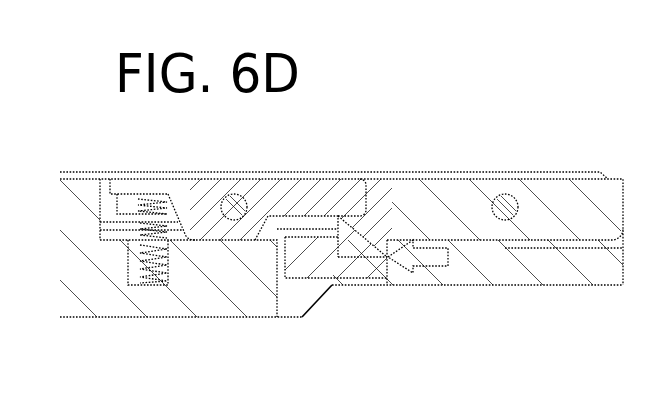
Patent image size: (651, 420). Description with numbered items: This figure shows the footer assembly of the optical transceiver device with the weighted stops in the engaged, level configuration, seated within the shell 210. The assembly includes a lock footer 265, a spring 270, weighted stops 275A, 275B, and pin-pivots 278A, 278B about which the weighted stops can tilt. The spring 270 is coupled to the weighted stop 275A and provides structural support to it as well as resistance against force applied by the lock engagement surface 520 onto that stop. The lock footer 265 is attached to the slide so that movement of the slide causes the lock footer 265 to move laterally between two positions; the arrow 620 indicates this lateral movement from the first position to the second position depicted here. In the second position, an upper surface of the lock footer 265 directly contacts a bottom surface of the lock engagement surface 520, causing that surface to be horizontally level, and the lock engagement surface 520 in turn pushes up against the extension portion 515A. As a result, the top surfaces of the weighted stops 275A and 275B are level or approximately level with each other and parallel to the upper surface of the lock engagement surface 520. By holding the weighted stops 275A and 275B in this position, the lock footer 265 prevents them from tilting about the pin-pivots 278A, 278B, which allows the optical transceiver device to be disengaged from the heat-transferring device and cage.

The shell 210 is at (83, 198).
The weighted stop 275A is at (188, 197).
The weighted stop 275B is at (565, 189).
The spring 270 is at (153, 263).
The pin-pivot 278A is at (235, 207).
The pin-pivot 278B is at (505, 207).
The extension portion 515A is at (348, 190).
The lock engagement surface 520 is at (364, 240).
The lock footer 265 is at (370, 270).
The arrow 620 is at (413, 255).